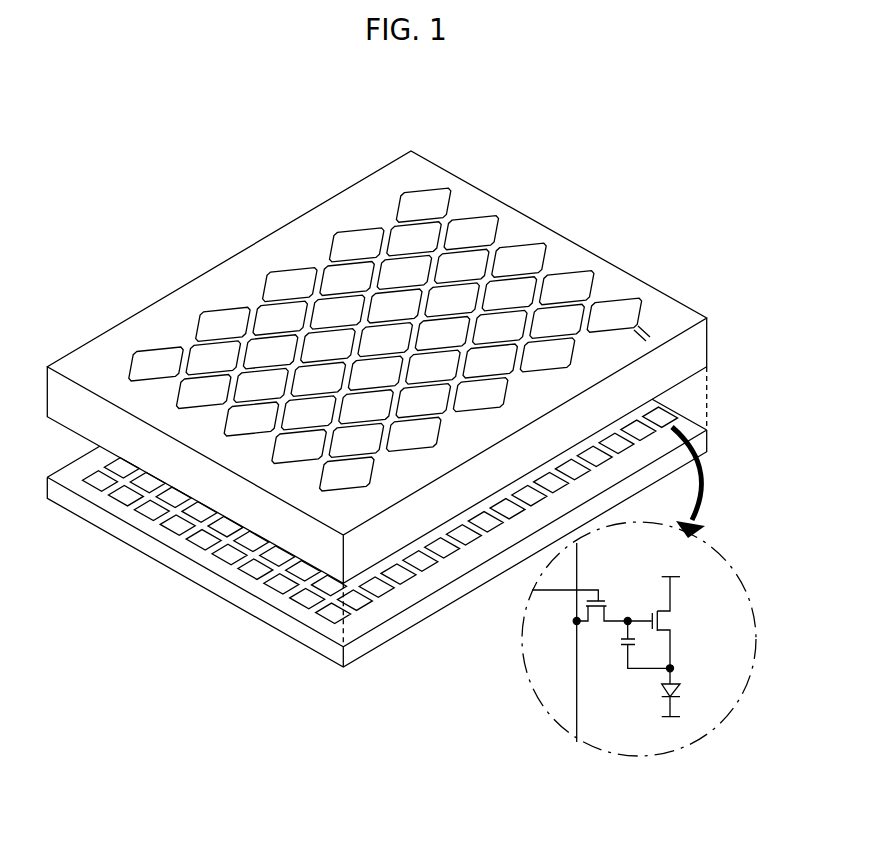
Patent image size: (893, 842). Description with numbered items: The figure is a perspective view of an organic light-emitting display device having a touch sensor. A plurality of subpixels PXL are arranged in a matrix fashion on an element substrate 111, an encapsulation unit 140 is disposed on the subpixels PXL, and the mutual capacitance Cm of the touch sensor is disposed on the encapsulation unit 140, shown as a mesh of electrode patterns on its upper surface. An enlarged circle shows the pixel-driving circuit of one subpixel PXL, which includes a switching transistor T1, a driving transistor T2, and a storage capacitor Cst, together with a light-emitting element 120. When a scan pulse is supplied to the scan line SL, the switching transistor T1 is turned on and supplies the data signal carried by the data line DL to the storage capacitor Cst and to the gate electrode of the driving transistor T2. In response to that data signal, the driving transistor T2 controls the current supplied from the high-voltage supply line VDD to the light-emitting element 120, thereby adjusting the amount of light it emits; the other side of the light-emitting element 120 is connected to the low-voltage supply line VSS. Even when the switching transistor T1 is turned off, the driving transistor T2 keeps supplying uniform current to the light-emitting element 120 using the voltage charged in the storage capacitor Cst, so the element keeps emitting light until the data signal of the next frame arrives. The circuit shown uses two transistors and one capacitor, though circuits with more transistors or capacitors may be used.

The encapsulation unit 140 is at (702, 350).
The element substrate 111 is at (702, 440).
The light-emitting element 120 is at (648, 639).
The subpixel PXL is at (678, 406).
The mutual capacitance Cm is at (618, 335).
The data line DL is at (591, 642).
The scan line SL is at (565, 605).
The switching transistor T1 is at (612, 608).
The driving transistor T2 is at (674, 624).
The storage capacitor Cst is at (645, 644).
The high-voltage supply line VDD is at (670, 565).
The low-voltage supply line VSS is at (672, 709).